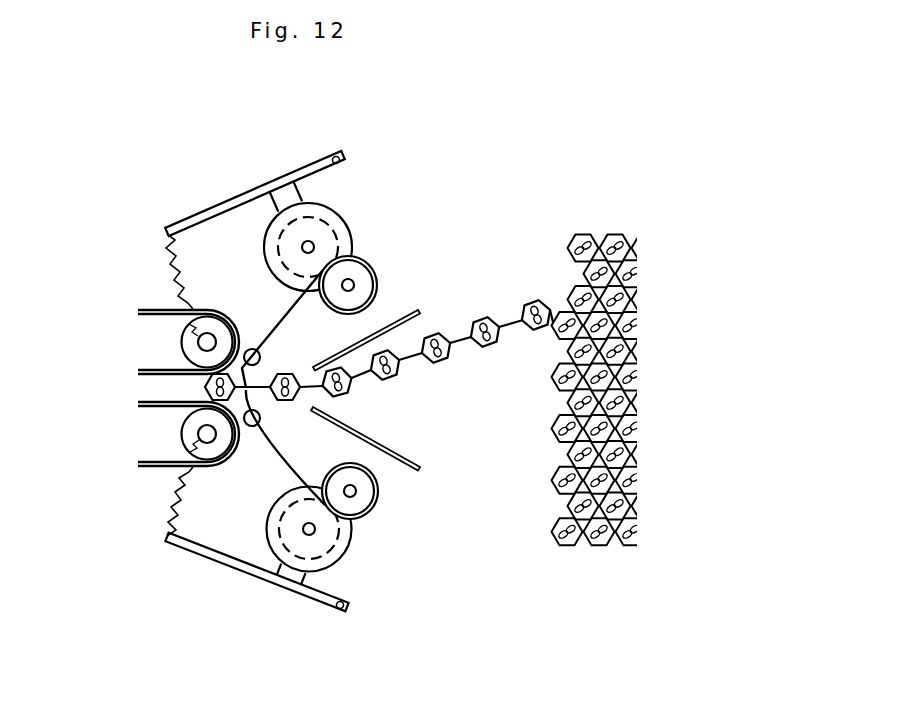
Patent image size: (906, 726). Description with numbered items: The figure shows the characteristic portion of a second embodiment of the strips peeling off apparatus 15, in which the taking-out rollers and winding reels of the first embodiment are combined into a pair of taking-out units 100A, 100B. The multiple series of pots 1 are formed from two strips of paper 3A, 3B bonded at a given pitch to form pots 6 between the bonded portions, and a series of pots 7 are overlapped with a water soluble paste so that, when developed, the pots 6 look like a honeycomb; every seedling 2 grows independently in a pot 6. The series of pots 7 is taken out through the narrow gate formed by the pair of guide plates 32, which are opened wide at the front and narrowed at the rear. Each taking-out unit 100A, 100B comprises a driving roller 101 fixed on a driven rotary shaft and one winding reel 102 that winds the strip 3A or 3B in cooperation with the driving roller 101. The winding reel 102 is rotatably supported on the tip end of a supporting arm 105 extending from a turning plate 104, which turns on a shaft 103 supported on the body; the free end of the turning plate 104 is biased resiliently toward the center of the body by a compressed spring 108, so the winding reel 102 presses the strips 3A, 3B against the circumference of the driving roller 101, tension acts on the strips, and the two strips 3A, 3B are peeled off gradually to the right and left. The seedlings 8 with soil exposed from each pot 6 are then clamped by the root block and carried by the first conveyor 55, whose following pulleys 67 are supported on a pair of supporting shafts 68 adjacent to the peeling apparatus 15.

The multiple series of pots 1 is at (626, 327).
The seedling 2 is at (628, 314).
The pot 6 is at (460, 303).
The series of pots 7 is at (510, 349).
The seedling with soil 8 is at (243, 376).
The strips peeling off apparatus 15 is at (470, 118).
The guide plates 32 is at (398, 451).
The first conveyor 55 is at (147, 312).
The following pulleys 67 is at (184, 436).
The supporting shafts 68 is at (195, 410).
The strip of paper 3A is at (281, 320).
The strip of paper 3B is at (273, 456).
The taking-out unit 100A is at (363, 405).
The taking-out unit 100B is at (418, 576).
The driving roller 101 is at (378, 262).
The winding reel 102 is at (345, 213).
The shaft 103 is at (332, 158).
The turning plate 104 is at (192, 220).
The supporting arm 105 is at (283, 196).
The compressed spring 108 is at (170, 253).